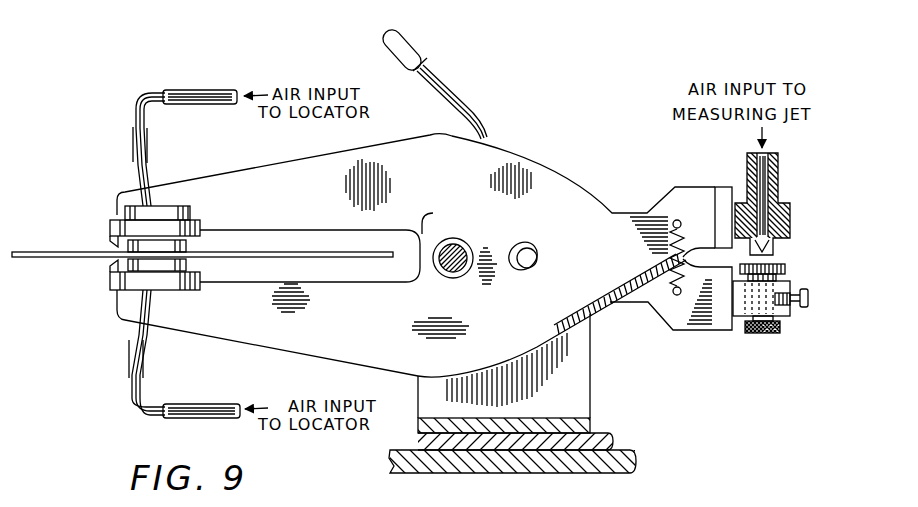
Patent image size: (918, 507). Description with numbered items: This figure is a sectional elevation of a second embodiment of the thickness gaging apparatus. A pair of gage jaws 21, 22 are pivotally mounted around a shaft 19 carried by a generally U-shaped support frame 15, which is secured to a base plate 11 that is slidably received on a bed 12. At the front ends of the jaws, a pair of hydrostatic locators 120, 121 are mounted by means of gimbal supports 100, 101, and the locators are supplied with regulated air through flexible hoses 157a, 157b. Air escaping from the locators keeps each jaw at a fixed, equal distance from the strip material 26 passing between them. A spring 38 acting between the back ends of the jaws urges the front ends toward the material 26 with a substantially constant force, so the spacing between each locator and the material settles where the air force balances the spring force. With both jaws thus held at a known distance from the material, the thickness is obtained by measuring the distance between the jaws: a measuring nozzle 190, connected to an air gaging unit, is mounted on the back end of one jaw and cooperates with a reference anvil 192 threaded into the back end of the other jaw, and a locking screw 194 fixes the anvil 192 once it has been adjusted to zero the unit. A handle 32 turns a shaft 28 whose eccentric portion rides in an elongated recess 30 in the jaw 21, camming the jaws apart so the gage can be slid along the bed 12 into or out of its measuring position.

The gage jaw 22 is at (257, 166).
The gage jaw 21 is at (251, 352).
The strip material 26 is at (66, 250).
The flexible hose 157a is at (133, 157).
The flexible hose 157b is at (128, 368).
The gimbal support 101 is at (205, 228).
The hydrostatic locator 121 is at (191, 246).
The hydrostatic locator 120 is at (191, 266).
The gimbal support 100 is at (206, 281).
The shaft 19 is at (447, 267).
The elongated recess 30 is at (518, 244).
The shaft 28 is at (538, 272).
The springs 38 is at (668, 258).
The measuring nozzle 190 is at (785, 177).
The reference anvil 192 is at (790, 267).
The locking screw 194 is at (805, 313).
The support frame 15 is at (580, 383).
The base plate 11 is at (602, 440).
The bed 12 is at (625, 470).
The handle 32 is at (424, 47).